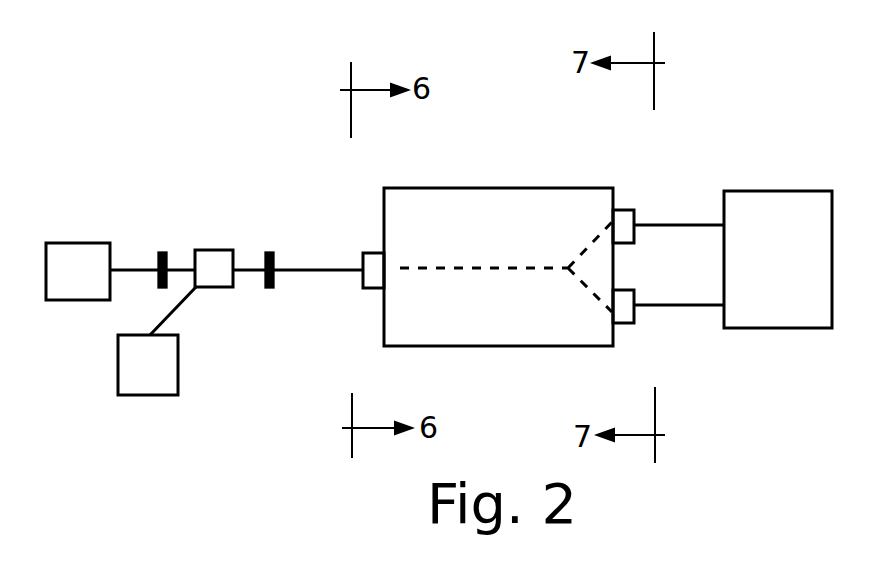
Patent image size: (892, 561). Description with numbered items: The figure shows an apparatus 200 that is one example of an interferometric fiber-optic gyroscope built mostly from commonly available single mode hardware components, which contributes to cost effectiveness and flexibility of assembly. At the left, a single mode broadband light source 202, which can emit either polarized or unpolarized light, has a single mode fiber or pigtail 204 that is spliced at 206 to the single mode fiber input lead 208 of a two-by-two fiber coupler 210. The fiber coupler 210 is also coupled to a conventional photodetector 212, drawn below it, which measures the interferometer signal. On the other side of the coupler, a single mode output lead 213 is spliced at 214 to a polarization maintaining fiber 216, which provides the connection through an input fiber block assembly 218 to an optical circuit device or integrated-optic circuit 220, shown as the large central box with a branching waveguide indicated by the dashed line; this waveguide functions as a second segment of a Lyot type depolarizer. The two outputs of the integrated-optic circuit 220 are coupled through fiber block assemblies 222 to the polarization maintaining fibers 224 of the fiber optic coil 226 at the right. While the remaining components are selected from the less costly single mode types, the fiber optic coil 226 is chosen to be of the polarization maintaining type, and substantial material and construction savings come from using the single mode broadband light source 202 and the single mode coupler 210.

The apparatus 200 is at (296, 108).
The broadband light source 202 is at (76, 243).
The single mode fiber or pigtail 204 is at (140, 272).
The splice 206 is at (162, 251).
The single mode fiber input lead 208 is at (178, 267).
The fiber coupler 210 is at (221, 250).
The photodetector 212 is at (147, 397).
The single mode output lead 213 is at (243, 274).
The splice 214 is at (272, 251).
The polarization maintaining fiber 216 is at (302, 274).
The input fiber block assembly 218 is at (363, 258).
The integrated-optic circuit 220 is at (478, 188).
The fiber block assemblies 222 is at (633, 210).
The polarization maintaining fibers 224 is at (685, 223).
The fiber optic coil 226 is at (735, 191).